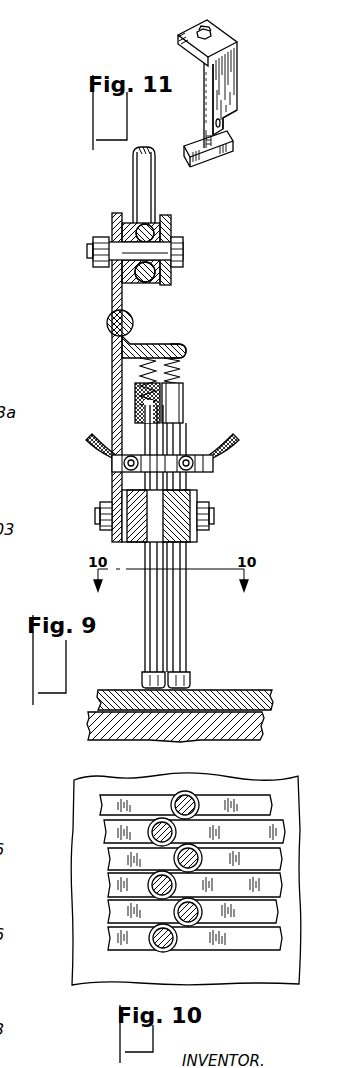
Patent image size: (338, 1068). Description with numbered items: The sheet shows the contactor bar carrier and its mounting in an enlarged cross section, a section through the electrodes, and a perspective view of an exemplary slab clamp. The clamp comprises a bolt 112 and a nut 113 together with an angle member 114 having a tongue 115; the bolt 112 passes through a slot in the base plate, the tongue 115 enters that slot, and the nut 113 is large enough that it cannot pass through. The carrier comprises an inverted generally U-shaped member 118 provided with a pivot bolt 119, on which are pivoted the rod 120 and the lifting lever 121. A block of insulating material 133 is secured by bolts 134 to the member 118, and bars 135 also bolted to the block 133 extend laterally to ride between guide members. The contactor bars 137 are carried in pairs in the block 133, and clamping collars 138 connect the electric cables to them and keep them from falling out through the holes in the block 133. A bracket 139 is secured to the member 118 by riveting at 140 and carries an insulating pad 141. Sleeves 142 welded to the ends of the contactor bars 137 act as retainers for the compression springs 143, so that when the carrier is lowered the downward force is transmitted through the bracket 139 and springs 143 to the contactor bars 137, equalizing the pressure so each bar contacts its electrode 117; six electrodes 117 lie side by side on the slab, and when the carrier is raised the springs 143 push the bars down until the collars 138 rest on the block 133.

In FIG. 11, the bolt 112 is at (203, 93).
In FIG. 11, the nut 113 is at (212, 162).
In FIG. 11, the angle member 114 is at (233, 66).
In FIG. 11, the tongue 115 is at (236, 116).
In FIG. 9, the electrodes 117 is at (180, 716).
In FIG. 10, the electrodes 117 is at (223, 943).
In FIG. 9, the inverted generally U-shaped member 118 is at (112, 287).
In FIG. 9, the pivot bolt 119 is at (182, 250).
In FIG. 9, the rod 120 is at (140, 183).
In FIG. 9, the lifting lever 121 is at (172, 228).
In FIG. 9, the block of insulating material 133 is at (190, 502).
In FIG. 9, the bolts 134 is at (100, 517).
In FIG. 9, the bars 135 is at (210, 527).
In FIG. 9, the contactor bars 137 is at (150, 643).
In FIG. 10, the contactor bars 137 is at (165, 942).
In FIG. 9, the clamping collars 138 is at (135, 452).
In FIG. 9, the bracket 139 is at (160, 345).
In FIG. 9, the riveting 140 is at (133, 323).
In FIG. 9, the insulating pad 141 is at (184, 357).
In FIG. 9, the sleeves 142 is at (135, 400).
In FIG. 9, the compression springs 143 is at (143, 366).